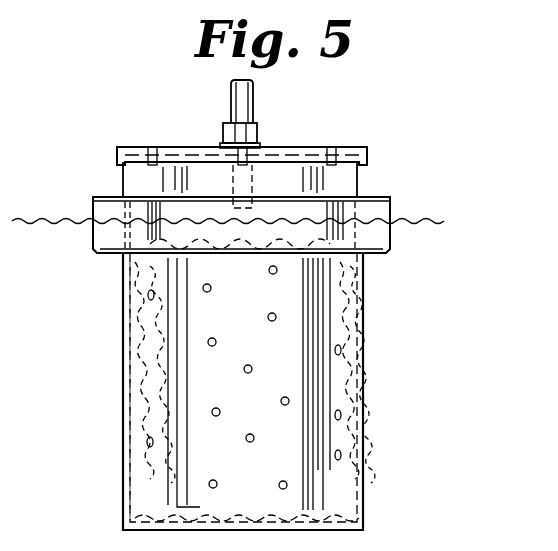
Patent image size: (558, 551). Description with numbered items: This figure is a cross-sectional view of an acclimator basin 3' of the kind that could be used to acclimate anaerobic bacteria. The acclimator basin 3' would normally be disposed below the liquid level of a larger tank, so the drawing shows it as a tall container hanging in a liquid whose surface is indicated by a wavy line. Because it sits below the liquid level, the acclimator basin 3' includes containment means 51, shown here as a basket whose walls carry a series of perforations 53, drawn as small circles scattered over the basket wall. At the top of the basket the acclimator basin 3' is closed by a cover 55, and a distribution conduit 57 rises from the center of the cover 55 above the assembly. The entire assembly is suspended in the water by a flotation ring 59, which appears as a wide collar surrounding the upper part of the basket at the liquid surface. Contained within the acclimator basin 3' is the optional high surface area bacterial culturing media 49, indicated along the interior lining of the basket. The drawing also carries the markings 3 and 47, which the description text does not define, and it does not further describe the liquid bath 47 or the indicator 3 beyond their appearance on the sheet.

The section line indicator 3 is at (17, 133).
The acclimator basin 3' is at (421, 363).
The liquid bath 47 is at (222, 253).
The high surface area bacterial culturing media 49 is at (130, 382).
The containment means 51 is at (372, 185).
The perforations 53 is at (211, 288).
The cover 55 is at (302, 152).
The distribution conduit 57 is at (232, 100).
The flotation ring 59 is at (105, 207).